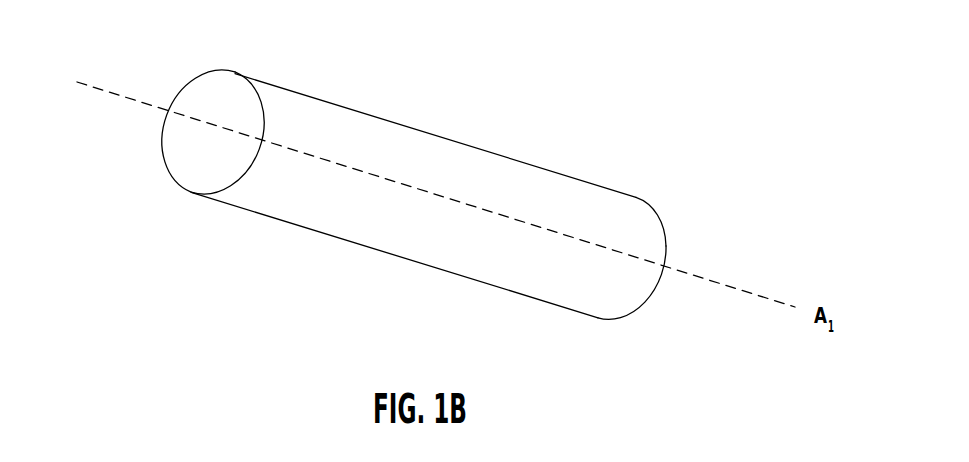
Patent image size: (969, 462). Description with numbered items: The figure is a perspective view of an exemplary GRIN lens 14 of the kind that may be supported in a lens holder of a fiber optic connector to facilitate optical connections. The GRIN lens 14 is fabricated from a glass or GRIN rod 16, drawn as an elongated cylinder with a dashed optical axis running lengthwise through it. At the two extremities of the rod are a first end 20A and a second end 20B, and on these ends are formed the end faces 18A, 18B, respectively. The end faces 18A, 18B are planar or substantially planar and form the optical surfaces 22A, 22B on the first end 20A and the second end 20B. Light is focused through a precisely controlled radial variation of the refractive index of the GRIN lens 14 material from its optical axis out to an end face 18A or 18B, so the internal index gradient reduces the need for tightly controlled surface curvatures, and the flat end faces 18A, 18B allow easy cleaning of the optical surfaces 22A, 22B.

The GRIN lens 14 is at (468, 146).
The GRIN rod 16 is at (402, 238).
The end face 18A is at (215, 110).
The end face 18B is at (668, 228).
The first end 20A is at (174, 147).
The second end 20B is at (673, 302).
The optical surface 22A is at (197, 162).
The optical surface 22B is at (606, 337).